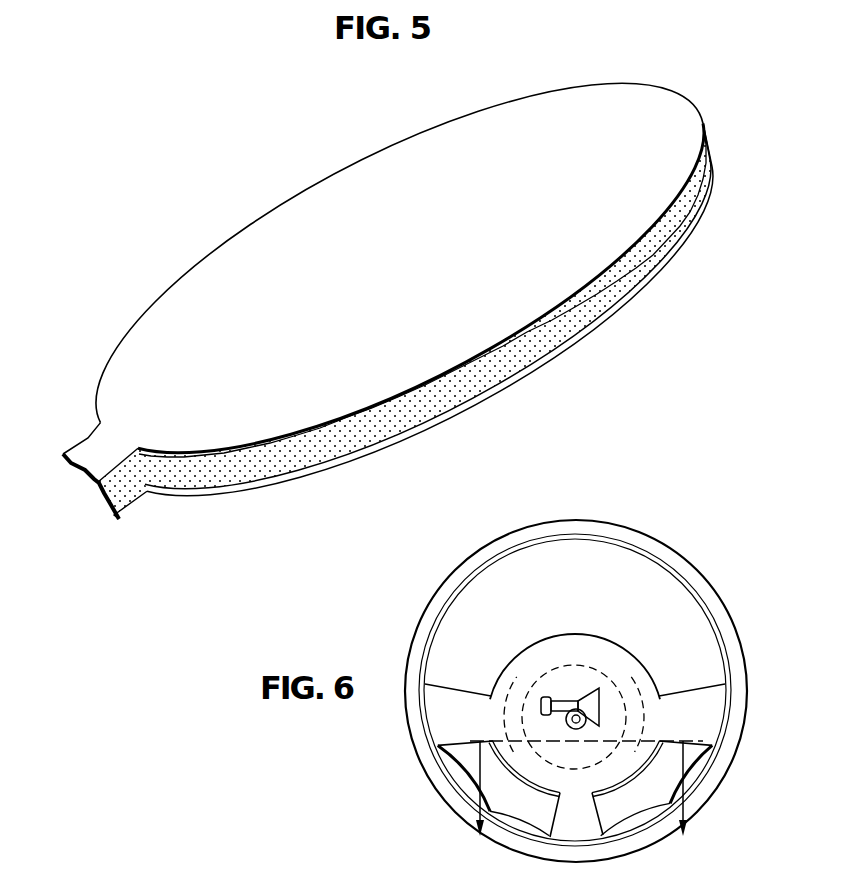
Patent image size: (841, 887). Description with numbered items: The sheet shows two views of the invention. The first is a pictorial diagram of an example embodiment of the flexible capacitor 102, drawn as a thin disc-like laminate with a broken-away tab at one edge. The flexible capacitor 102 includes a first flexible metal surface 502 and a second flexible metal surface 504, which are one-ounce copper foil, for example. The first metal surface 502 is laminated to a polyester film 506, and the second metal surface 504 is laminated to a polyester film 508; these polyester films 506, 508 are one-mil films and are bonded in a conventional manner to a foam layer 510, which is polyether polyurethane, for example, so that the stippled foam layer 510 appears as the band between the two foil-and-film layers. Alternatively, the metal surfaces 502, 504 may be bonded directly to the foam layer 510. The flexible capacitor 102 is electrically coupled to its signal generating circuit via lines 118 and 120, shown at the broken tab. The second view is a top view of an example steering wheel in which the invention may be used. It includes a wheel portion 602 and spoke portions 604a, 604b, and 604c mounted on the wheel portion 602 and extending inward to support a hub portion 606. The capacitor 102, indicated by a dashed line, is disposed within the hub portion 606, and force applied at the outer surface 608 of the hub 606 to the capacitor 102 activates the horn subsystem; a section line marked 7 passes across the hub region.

In FIG. 5, the flexible capacitor 102 is at (360, 145).
In FIG. 6, the flexible capacitor 102 is at (598, 656).
In FIG. 5, the line 118 is at (80, 430).
In FIG. 5, the line 120 is at (114, 490).
In FIG. 5, the first flexible metal surface 502 is at (646, 92).
In FIG. 5, the second flexible metal surface 504 is at (533, 363).
In FIG. 5, the polyester film 506 is at (679, 168).
In FIG. 5, the polyester film 508 is at (616, 300).
In FIG. 5, the foam layer 510 is at (651, 243).
In FIG. 6, the wheel portion 602 is at (708, 589).
In FIG. 6, the spoke portion 604a is at (444, 702).
In FIG. 6, the spoke portion 604b is at (679, 694).
In FIG. 6, the spoke portion 604c is at (577, 821).
In FIG. 6, the hub portion 606 is at (571, 625).
In FIG. 6, the outer surface 608 is at (516, 665).
In FIG. 6, the section line 7- 7 is at (581, 812).